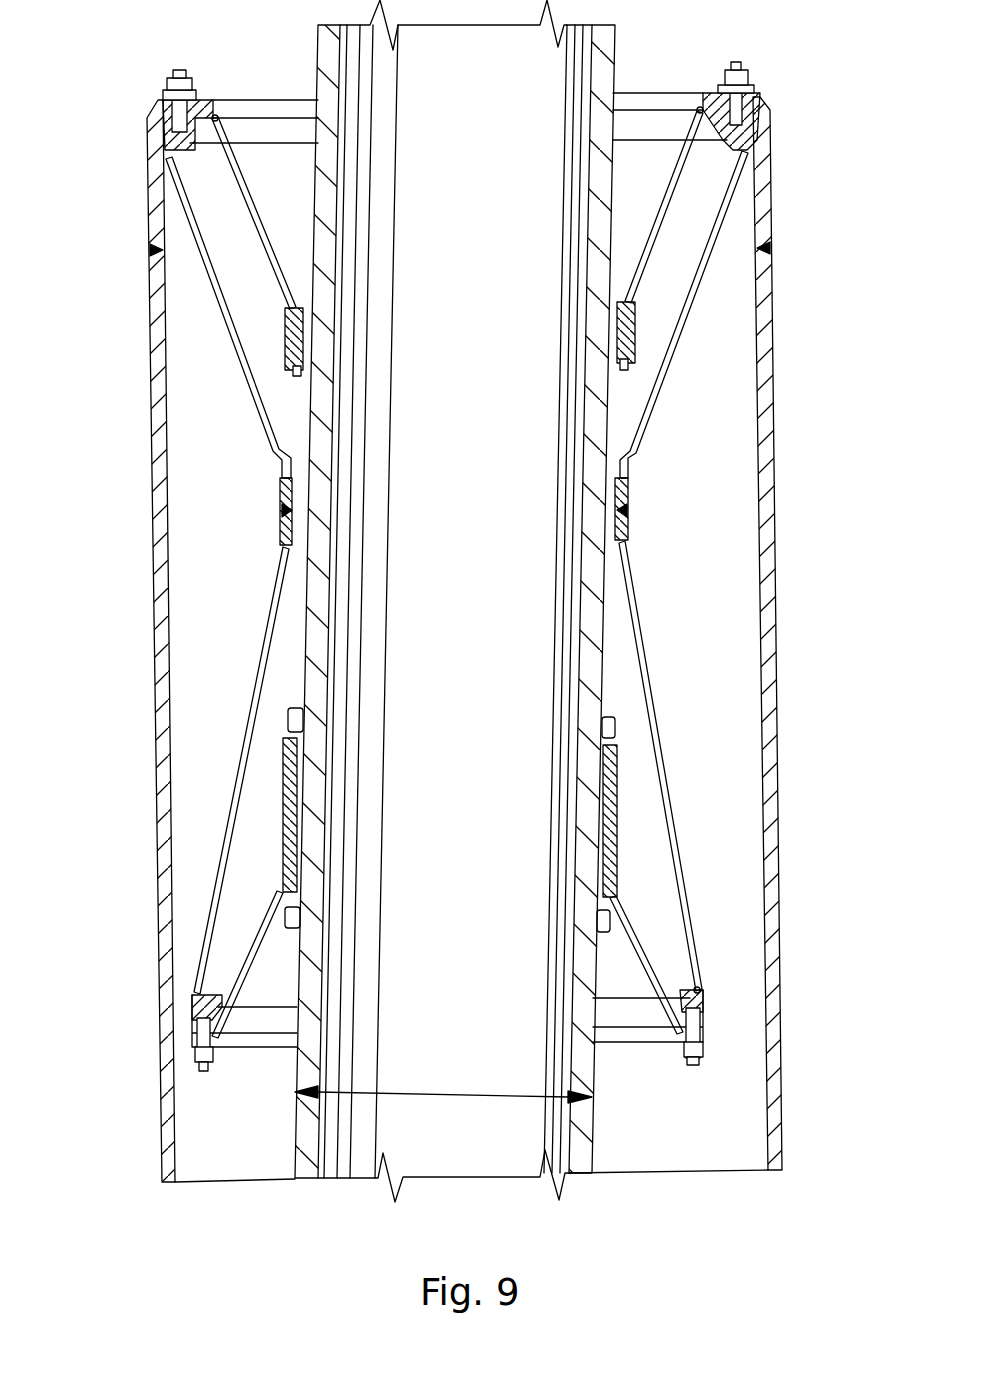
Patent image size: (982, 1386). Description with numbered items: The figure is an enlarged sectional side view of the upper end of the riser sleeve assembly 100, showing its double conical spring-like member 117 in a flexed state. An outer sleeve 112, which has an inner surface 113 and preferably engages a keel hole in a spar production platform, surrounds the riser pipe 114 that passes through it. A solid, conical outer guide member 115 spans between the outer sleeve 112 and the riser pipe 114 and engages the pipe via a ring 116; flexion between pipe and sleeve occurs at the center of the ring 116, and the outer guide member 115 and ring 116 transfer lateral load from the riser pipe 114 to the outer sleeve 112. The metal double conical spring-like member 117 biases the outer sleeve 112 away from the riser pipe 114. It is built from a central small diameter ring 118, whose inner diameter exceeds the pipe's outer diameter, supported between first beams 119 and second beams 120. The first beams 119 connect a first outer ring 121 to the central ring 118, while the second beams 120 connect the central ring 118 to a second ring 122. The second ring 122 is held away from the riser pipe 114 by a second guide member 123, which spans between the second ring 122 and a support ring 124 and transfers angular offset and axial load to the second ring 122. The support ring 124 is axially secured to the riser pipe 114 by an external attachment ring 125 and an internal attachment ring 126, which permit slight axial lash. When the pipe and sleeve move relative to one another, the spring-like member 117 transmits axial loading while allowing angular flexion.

The riser sleeve assembly 100 is at (115, 89).
The outer sleeve 112 is at (150, 462).
The inner surface 113 is at (177, 358).
The riser pipe 114 is at (318, 60).
The outer guide member 115 is at (670, 183).
The ring 116 is at (630, 325).
The double conical spring-like member 117 is at (109, 250).
The central small diameter ring 118 is at (630, 522).
The first beams 119 is at (673, 343).
The second beams 120 is at (675, 805).
The first outer ring 121 is at (733, 132).
The second ring 122 is at (703, 1000).
The second guide member 123 is at (645, 980).
The support ring 124 is at (282, 852).
The external attachment ring 125 is at (610, 922).
The internal attachment ring 126 is at (618, 724).